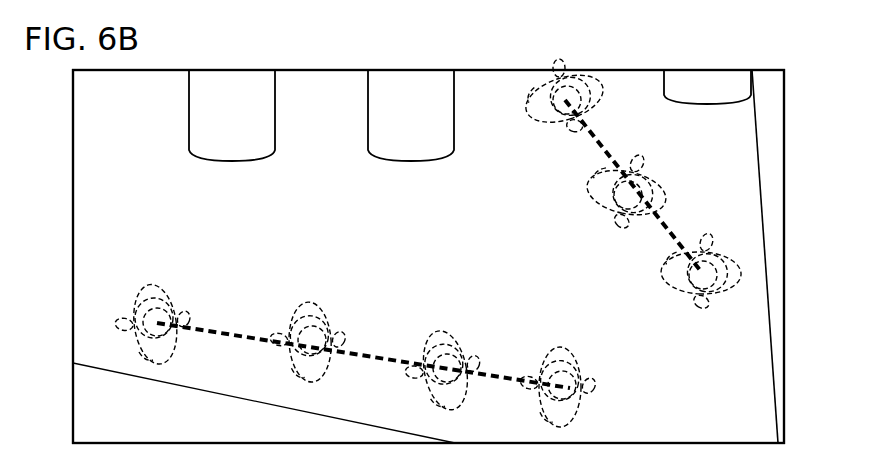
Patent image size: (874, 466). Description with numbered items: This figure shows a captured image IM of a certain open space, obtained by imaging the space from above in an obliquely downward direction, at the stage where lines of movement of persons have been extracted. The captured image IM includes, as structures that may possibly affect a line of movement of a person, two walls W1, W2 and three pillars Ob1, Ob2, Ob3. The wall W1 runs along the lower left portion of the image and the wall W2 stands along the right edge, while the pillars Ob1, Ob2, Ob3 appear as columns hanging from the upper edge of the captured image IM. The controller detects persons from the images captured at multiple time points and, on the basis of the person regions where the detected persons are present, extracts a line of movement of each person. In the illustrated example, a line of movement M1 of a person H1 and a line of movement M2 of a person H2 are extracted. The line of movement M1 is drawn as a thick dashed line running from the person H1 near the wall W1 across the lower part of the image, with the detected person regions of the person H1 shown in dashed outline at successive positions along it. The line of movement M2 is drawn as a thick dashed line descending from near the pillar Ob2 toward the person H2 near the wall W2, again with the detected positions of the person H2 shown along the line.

The pillar Ob1 is at (265, 136).
The pillar Ob2 is at (442, 134).
The pillar Ob3 is at (740, 95).
The wall W1 is at (264, 403).
The wall W2 is at (774, 158).
The captured image IM is at (785, 212).
The person H1 is at (168, 296).
The person H2 is at (669, 291).
The line of movement M1 is at (218, 330).
The line of movement M2 is at (663, 236).